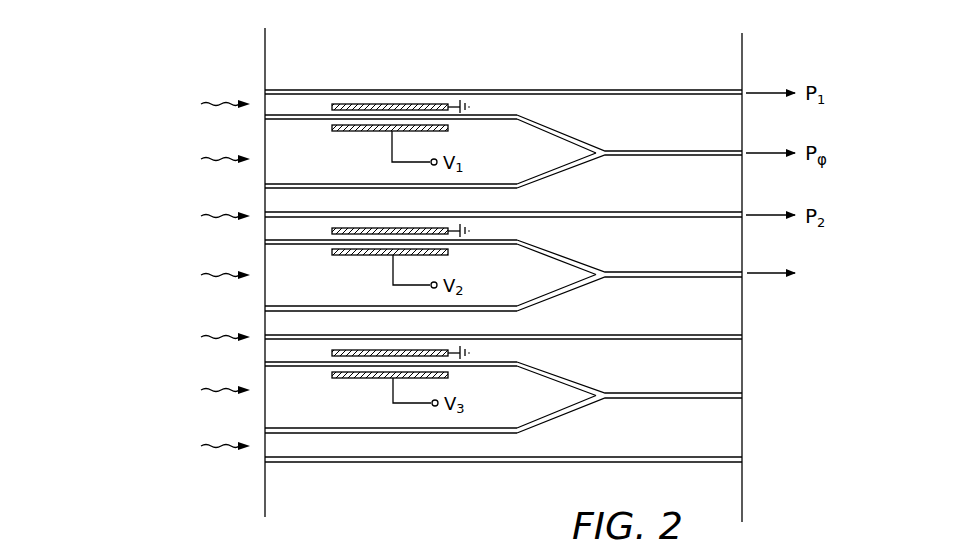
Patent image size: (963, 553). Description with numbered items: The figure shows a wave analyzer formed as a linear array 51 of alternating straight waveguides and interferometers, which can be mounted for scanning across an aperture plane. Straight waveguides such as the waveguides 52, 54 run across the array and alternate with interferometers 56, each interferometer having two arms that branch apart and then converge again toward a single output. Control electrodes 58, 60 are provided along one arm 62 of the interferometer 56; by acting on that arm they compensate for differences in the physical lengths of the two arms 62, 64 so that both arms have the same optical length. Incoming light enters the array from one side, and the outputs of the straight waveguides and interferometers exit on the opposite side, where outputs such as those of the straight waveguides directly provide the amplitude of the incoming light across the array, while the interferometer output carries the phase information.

The linear array 51 is at (366, 70).
The straight waveguide 52 is at (621, 89).
The straight waveguide 54 is at (663, 212).
The interferometer 56 is at (238, 134).
The control electrode 58 is at (449, 129).
The control electrode 60 is at (417, 104).
The arm 62 is at (583, 138).
The arm 64 is at (568, 172).